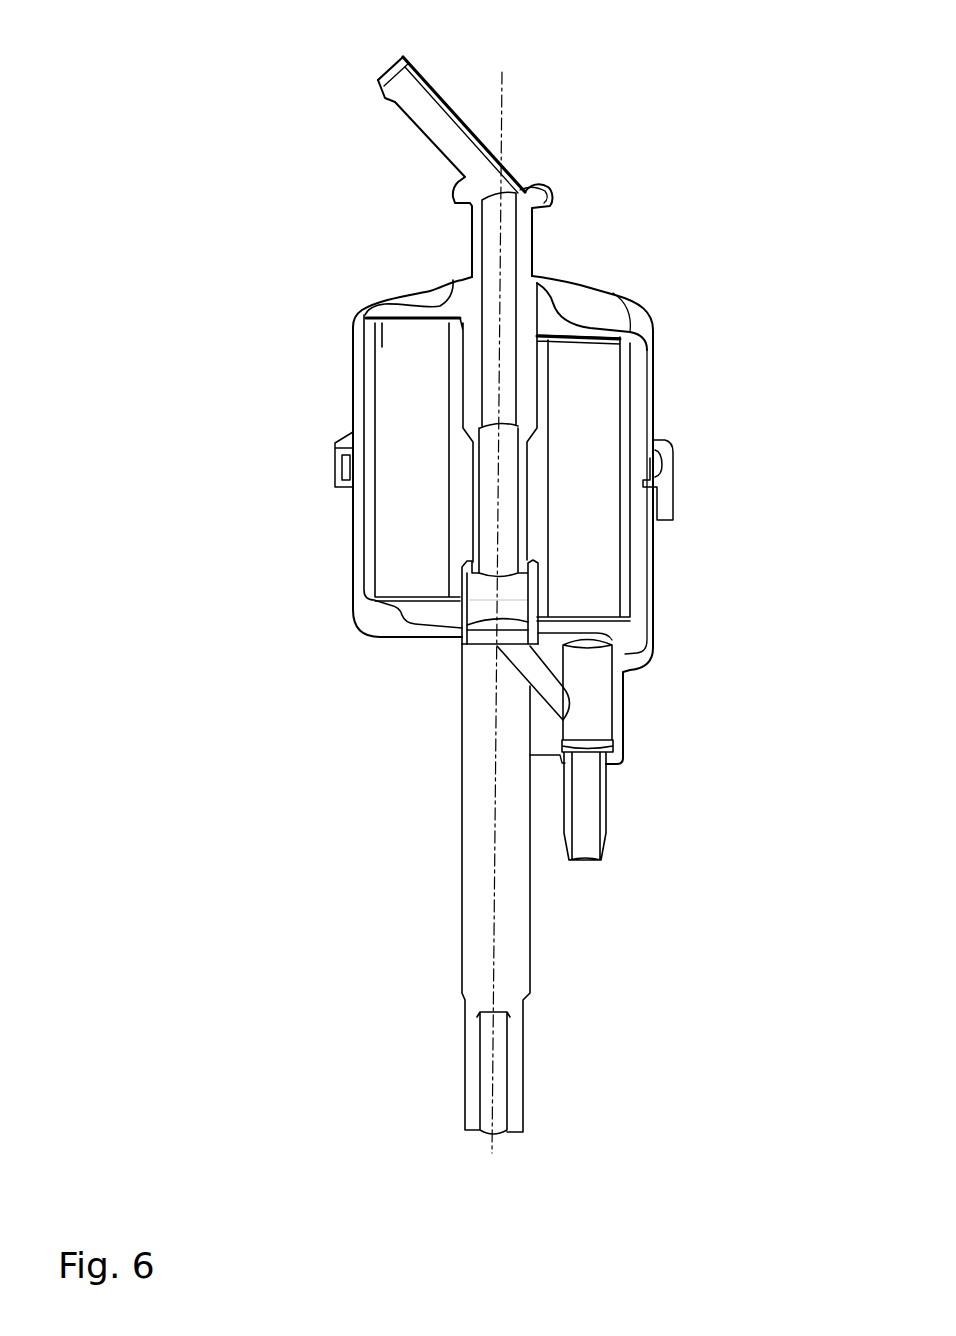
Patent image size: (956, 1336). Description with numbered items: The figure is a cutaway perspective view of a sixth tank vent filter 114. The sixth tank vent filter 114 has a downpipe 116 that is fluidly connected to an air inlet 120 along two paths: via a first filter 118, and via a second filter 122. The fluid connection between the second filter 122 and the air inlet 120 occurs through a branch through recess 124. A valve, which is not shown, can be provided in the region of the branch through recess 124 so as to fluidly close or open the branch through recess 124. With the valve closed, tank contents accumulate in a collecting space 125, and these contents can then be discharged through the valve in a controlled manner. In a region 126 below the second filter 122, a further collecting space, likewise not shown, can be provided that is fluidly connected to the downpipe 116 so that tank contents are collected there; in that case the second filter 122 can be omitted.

The sixth tank vent filter 114 is at (557, 577).
The downpipe 116 is at (462, 578).
The first filter 118 is at (593, 412).
The air inlet 120 is at (603, 829).
The second filter 122 is at (498, 646).
The branch through recess 124 is at (547, 685).
The collecting space 125 is at (490, 597).
The region below the second filter 126 is at (492, 680).